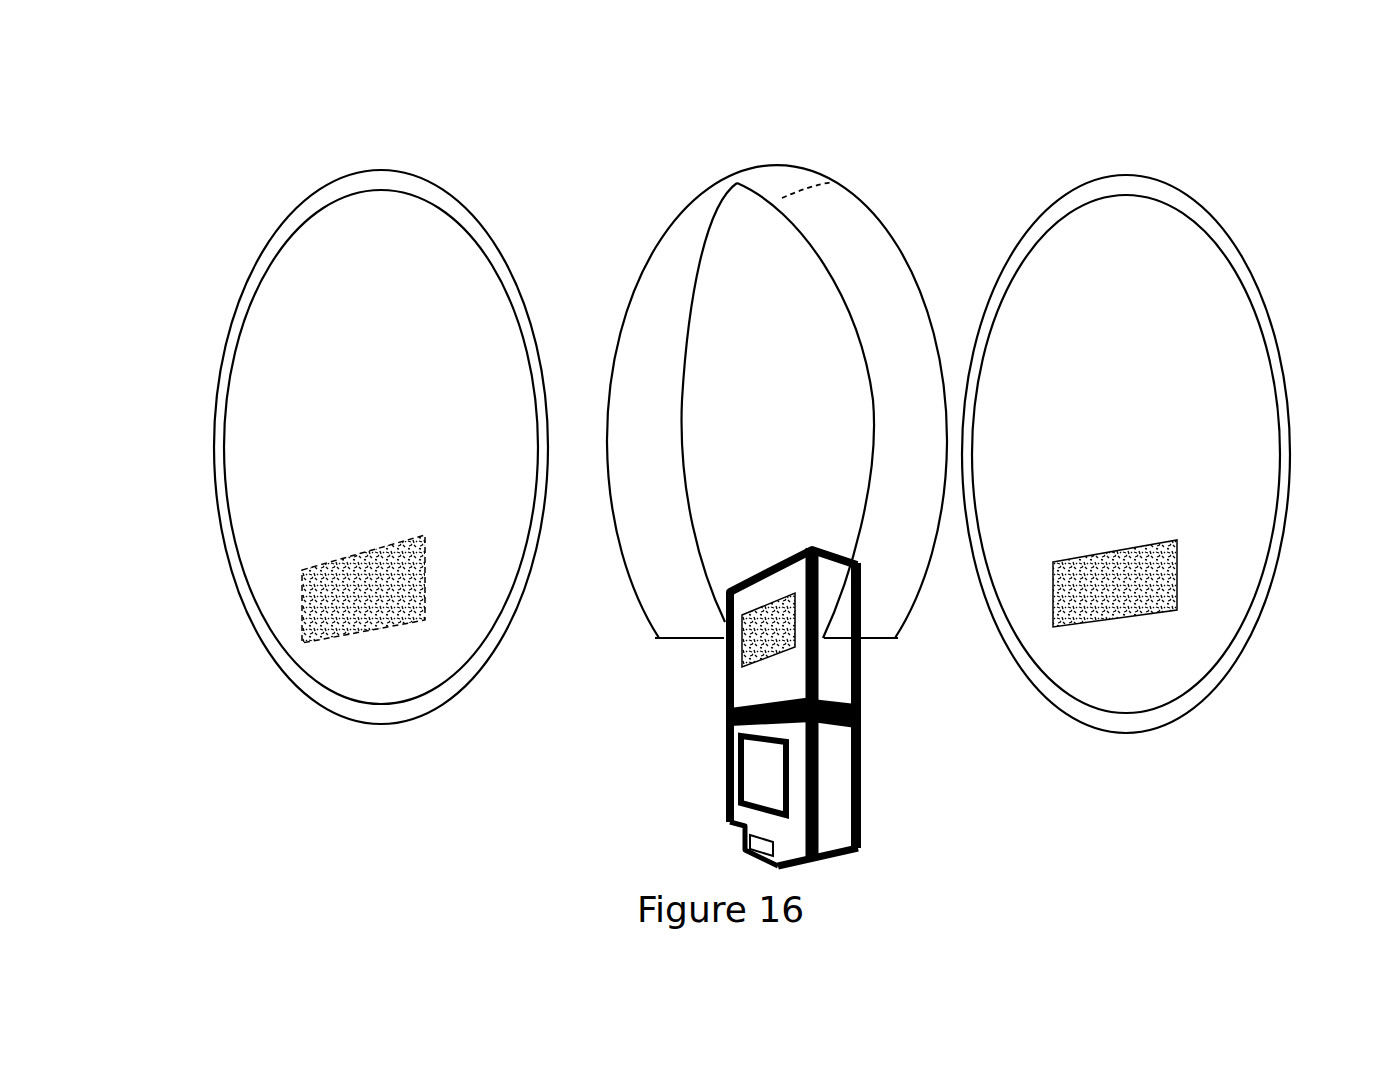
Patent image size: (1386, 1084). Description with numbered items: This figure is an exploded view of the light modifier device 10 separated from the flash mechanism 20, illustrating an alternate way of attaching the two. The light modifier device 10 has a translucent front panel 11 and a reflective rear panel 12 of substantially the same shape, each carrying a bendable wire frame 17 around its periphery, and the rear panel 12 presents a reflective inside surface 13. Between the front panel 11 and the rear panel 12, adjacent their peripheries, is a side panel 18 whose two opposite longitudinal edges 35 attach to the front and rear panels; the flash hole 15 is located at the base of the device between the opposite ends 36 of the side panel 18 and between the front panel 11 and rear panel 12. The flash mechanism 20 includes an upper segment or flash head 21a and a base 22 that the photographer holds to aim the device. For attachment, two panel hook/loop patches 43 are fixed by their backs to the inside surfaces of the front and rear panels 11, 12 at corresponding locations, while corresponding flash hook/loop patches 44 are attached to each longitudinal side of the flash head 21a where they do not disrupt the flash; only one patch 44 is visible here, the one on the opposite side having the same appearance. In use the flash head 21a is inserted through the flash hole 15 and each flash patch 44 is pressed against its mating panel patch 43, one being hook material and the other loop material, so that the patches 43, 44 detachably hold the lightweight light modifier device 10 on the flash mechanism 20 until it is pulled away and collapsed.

The light modifier device 10 is at (1024, 150).
The translucent front panel 11 is at (415, 248).
The reflective rear panel 12 is at (1128, 237).
The reflective inside surface 13 is at (653, 388).
The flash hole 15 is at (720, 645).
The bendable wire frame 17 is at (480, 227).
The side panel 18 is at (905, 298).
The flash mechanism 20 is at (834, 709).
The flash head 21a is at (843, 682).
The base 22 is at (833, 807).
The longitudinal edge 35 is at (693, 200).
The end of side panel 36 is at (687, 640).
The panel hook/loop patch 43 is at (385, 598).
The flash hook/loop patch 44 is at (767, 635).